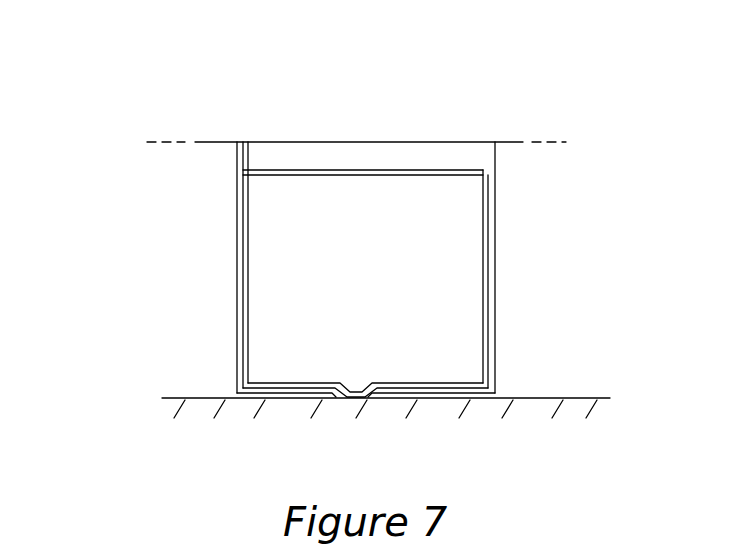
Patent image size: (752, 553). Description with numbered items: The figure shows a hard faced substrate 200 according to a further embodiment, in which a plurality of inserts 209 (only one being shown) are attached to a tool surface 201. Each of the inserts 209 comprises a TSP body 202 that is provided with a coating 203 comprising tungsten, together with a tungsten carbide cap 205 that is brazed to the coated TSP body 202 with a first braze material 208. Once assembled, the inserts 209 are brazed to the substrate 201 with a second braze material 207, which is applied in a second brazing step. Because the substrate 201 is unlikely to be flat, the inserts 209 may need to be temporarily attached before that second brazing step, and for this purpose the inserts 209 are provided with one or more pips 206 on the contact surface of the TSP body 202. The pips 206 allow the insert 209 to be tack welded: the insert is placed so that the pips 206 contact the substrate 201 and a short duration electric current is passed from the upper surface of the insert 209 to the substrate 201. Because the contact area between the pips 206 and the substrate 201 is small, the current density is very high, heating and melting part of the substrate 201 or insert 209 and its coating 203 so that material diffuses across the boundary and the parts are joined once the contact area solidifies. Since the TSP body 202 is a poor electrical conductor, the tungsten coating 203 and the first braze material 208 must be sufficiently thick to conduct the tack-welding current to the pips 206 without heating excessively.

The hard faced substrate 200 is at (113, 51).
The tool surface 201 is at (527, 400).
The TSP body 202 is at (462, 292).
The coating 203 is at (247, 288).
The tungsten carbide cap 205 is at (358, 155).
The pips 206 is at (355, 390).
The second braze material 207 is at (499, 157).
The first braze material 208 is at (238, 207).
The inserts 209 is at (310, 125).